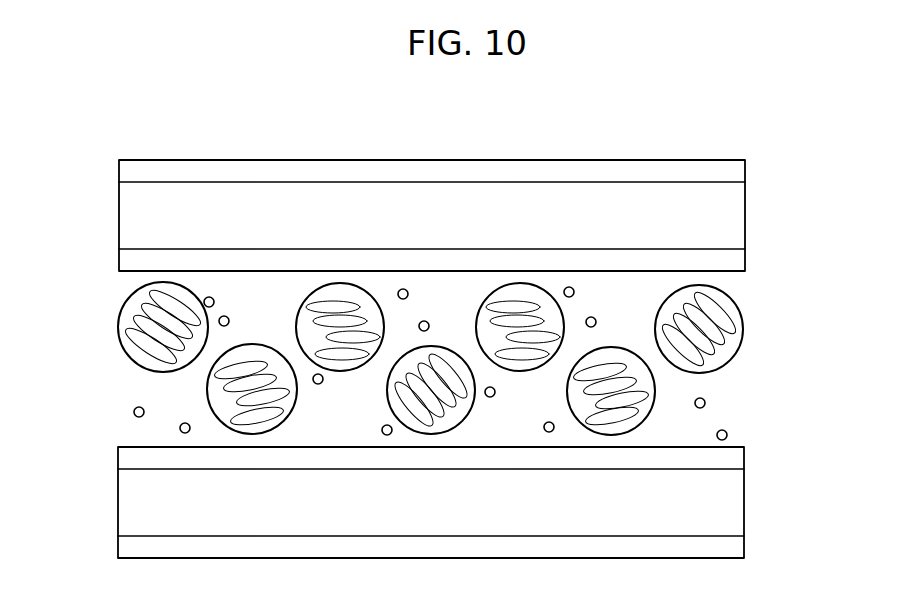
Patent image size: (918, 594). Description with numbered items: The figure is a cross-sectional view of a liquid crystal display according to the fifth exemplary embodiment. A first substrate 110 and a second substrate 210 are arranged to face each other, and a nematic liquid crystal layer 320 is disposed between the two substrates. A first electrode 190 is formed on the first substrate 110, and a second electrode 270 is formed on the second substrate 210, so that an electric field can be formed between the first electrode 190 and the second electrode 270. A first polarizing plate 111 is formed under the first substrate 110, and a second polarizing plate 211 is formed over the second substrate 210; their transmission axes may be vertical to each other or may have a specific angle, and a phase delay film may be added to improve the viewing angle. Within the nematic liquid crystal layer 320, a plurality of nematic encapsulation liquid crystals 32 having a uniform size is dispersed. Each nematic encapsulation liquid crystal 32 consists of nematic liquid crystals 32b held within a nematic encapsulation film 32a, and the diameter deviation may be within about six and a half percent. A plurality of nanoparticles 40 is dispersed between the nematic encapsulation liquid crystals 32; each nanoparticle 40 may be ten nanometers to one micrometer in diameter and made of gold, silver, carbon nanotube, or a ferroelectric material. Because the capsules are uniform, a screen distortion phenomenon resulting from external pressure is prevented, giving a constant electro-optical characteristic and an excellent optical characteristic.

The second substrate 210 is at (429, 215).
The second polarizing plate 211 is at (732, 172).
The second electrode 270 is at (130, 258).
The nematic liquid crystal layer 320 is at (451, 358).
The nematic encapsulation liquid crystal 32 is at (759, 328).
The nematic encapsulation film 32a is at (744, 332).
The nematic liquid crystals 32b is at (712, 315).
The nanoparticle 40 is at (706, 403).
The first electrode 190 is at (130, 456).
The first substrate 110 is at (429, 502).
The first polarizing plate 111 is at (730, 547).